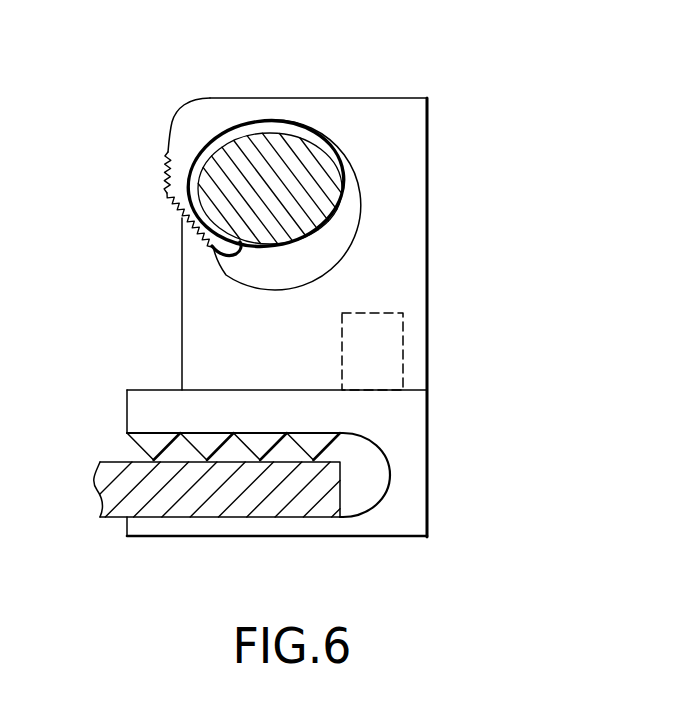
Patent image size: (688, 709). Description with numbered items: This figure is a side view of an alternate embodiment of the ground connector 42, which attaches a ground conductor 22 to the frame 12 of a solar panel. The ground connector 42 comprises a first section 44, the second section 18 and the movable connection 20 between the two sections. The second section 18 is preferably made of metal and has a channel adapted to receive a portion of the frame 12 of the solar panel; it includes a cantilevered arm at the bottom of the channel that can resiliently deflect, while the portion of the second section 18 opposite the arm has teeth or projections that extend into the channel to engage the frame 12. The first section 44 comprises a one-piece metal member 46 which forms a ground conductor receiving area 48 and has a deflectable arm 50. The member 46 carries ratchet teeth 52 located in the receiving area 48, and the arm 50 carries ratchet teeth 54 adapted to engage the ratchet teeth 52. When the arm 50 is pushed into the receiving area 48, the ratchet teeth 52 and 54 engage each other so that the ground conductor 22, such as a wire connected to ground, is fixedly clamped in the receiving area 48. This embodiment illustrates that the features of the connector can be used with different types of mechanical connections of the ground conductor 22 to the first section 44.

The frame 12 is at (117, 498).
The second section 18 is at (427, 483).
The movable connection 20 is at (405, 360).
The ground conductor 22 is at (270, 143).
The ground connector 42 is at (436, 127).
The first section 44 is at (427, 213).
The one-piece metal member 46 is at (165, 167).
The ground conductor receiving area 48 is at (257, 271).
The deflectable arm 50 is at (177, 130).
The ratchet teeth 52 is at (207, 238).
The ratchet teeth 54 is at (166, 197).